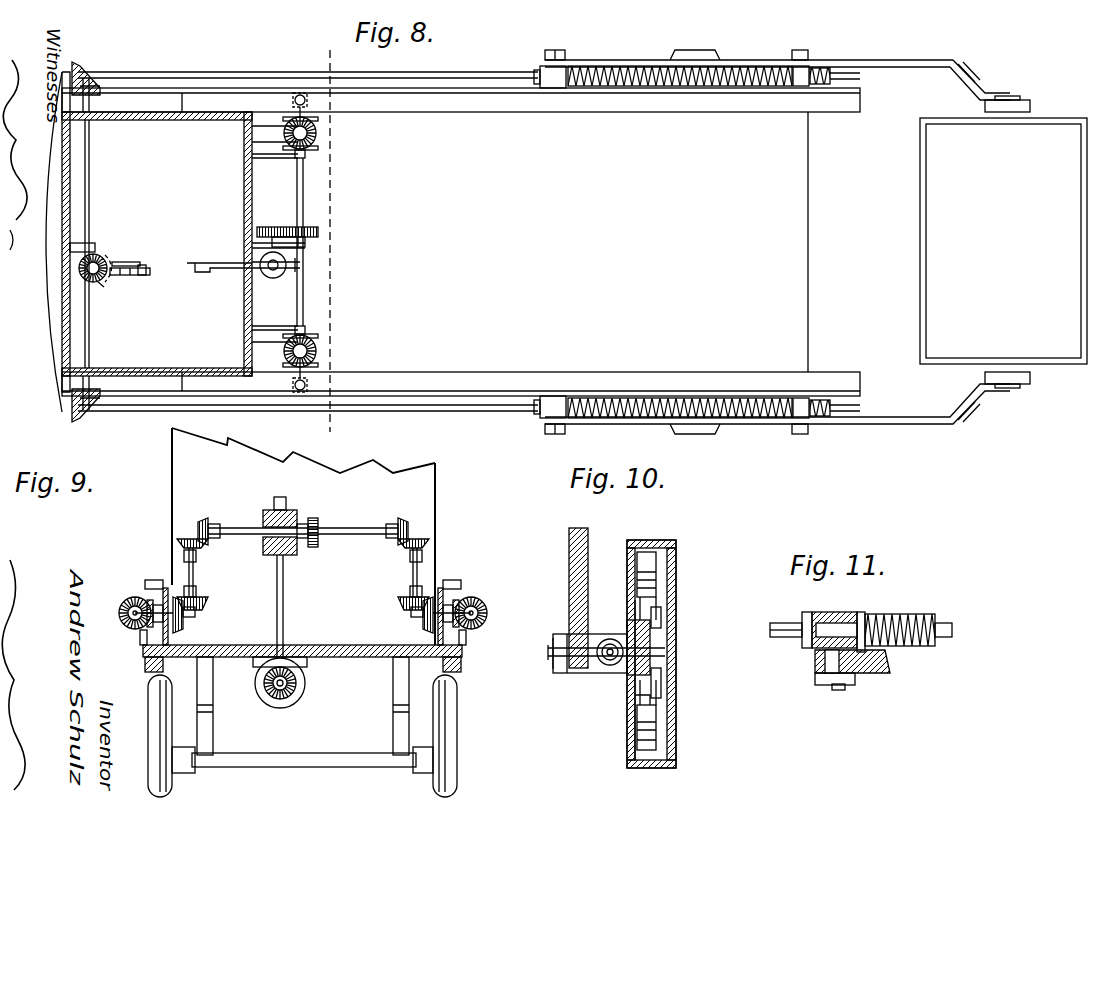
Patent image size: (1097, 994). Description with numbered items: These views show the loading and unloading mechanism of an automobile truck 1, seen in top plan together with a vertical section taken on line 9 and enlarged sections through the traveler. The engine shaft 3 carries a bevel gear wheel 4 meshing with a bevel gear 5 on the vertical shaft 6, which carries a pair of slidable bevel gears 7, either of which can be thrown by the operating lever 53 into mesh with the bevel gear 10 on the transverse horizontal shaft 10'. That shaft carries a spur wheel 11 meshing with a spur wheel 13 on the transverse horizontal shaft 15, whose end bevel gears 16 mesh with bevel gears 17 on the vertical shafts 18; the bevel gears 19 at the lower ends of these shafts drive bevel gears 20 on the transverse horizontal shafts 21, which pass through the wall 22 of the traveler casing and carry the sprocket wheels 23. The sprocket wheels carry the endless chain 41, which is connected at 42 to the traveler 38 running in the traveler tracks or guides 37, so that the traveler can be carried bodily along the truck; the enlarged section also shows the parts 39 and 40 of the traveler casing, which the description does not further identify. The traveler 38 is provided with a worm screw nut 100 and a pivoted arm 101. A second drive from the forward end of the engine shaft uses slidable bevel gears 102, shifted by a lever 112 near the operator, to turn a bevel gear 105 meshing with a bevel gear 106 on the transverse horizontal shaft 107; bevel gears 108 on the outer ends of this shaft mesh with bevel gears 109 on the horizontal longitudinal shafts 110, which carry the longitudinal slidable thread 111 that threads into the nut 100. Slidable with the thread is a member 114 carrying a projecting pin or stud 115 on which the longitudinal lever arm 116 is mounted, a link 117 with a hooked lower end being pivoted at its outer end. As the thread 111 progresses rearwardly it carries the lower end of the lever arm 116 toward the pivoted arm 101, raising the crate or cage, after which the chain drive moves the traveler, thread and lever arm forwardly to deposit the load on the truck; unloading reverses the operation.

In FIG. 8, the automobile truck 1 is at (795, 248).
In FIG. 9, the automobile truck 1 is at (437, 487).
In FIG. 9, the engine shaft 3 is at (280, 690).
In FIG. 9, the bevel gear wheel 4 is at (300, 695).
In FIG. 9, the bevel gear 5 is at (307, 680).
In FIG. 9, the vertical shaft 6 is at (285, 625).
In FIG. 8, the slidable bevel gears 7 is at (280, 278).
In FIG. 9, the slidable bevel gears 7 is at (290, 518).
In FIG. 8, the section line 9 is at (324, 246).
In FIG. 8, the bevel gear 10 is at (259, 254).
In FIG. 9, the bevel gear 10 is at (314, 547).
In FIG. 8, the transverse horizontal shaft 10' is at (329, 267).
In FIG. 8, the spur wheel 11 is at (270, 228).
In FIG. 8, the spur wheel 13 is at (320, 230).
In FIG. 9, the spur wheel 13 is at (318, 525).
In FIG. 8, the transverse horizontal shaft 15 is at (303, 290).
In FIG. 9, the transverse horizontal shaft 15 is at (238, 528).
In FIG. 8, the bevel gear 16 is at (310, 150).
In FIG. 9, the bevel gear 16 is at (203, 518).
In FIG. 8, the bevel gear 17 is at (320, 133).
In FIG. 9, the bevel gear 17 is at (185, 540).
In FIG. 9, the vertical shaft 18 is at (195, 570).
In FIG. 9, the bevel gear 19 is at (205, 603).
In FIG. 8, the bevel gear 20 is at (318, 125).
In FIG. 9, the bevel gear 20 is at (186, 615).
In FIG. 8, the transverse horizontal shaft 21 is at (310, 100).
In FIG. 9, the transverse horizontal shaft 21 is at (182, 592).
In FIG. 9, the wall of the traveler casing 22 is at (168, 645).
In FIG. 10, the wall of the traveler casing 22 is at (675, 727).
In FIG. 8, the sprocket wheel 23 is at (290, 100).
In FIG. 9, the sprocket wheel 23 is at (142, 633).
In FIG. 9, the traveler tracks or guides 37 is at (145, 597).
In FIG. 10, the traveler tracks or guides 37 is at (668, 545).
In FIG. 10, the traveler 38 is at (625, 595).
In FIG. 10, the cylinder 39 is at (672, 735).
In FIG. 10, the piston 40 is at (647, 565).
In FIG. 10, the endless chain 41 is at (665, 690).
In FIG. 10, the connection of chain to traveler 42 is at (662, 615).
In FIG. 8, the operating lever 53 is at (217, 282).
In FIG. 8, the worm screw nut 100 is at (800, 75).
In FIG. 10, the worm screw nut 100 is at (603, 673).
In FIG. 8, the pivoted arm 101 is at (690, 52).
In FIG. 10, the pivoted arm 101 is at (568, 558).
In FIG. 8, the slidable bevel gears 102 is at (115, 260).
In FIG. 8, the bevel gear 105 is at (102, 282).
In FIG. 8, the bevel gear 106 is at (97, 253).
In FIG. 8, the transverse horizontal shaft 107 is at (92, 210).
In FIG. 9, the transverse horizontal shaft 107 is at (170, 590).
In FIG. 8, the bevel gear 108 is at (100, 83).
In FIG. 9, the bevel gear 108 is at (150, 600).
In FIG. 8, the bevel gear 109 is at (78, 66).
In FIG. 9, the bevel gear 109 is at (118, 612).
In FIG. 8, the horizontal longitudinal shaft 110 is at (236, 73).
In FIG. 10, the horizontal longitudinal shaft 110 is at (610, 645).
In FIG. 11, the horizontal longitudinal shaft 110 is at (938, 627).
In FIG. 8, the longitudinal slidable thread 111 is at (597, 73).
In FIG. 10, the longitudinal slidable thread 111 is at (592, 673).
In FIG. 11, the longitudinal slidable thread 111 is at (910, 642).
In FIG. 8, the lever 112 is at (140, 264).
In FIG. 8, the member 114 is at (555, 88).
In FIG. 11, the member 114 is at (843, 613).
In FIG. 11, the projecting pin or stud 115 is at (818, 665).
In FIG. 8, the longitudinal lever arm 116 is at (900, 60).
In FIG. 11, the longitudinal lever arm 116 is at (882, 673).
In FIG. 8, the link 117 is at (1018, 100).